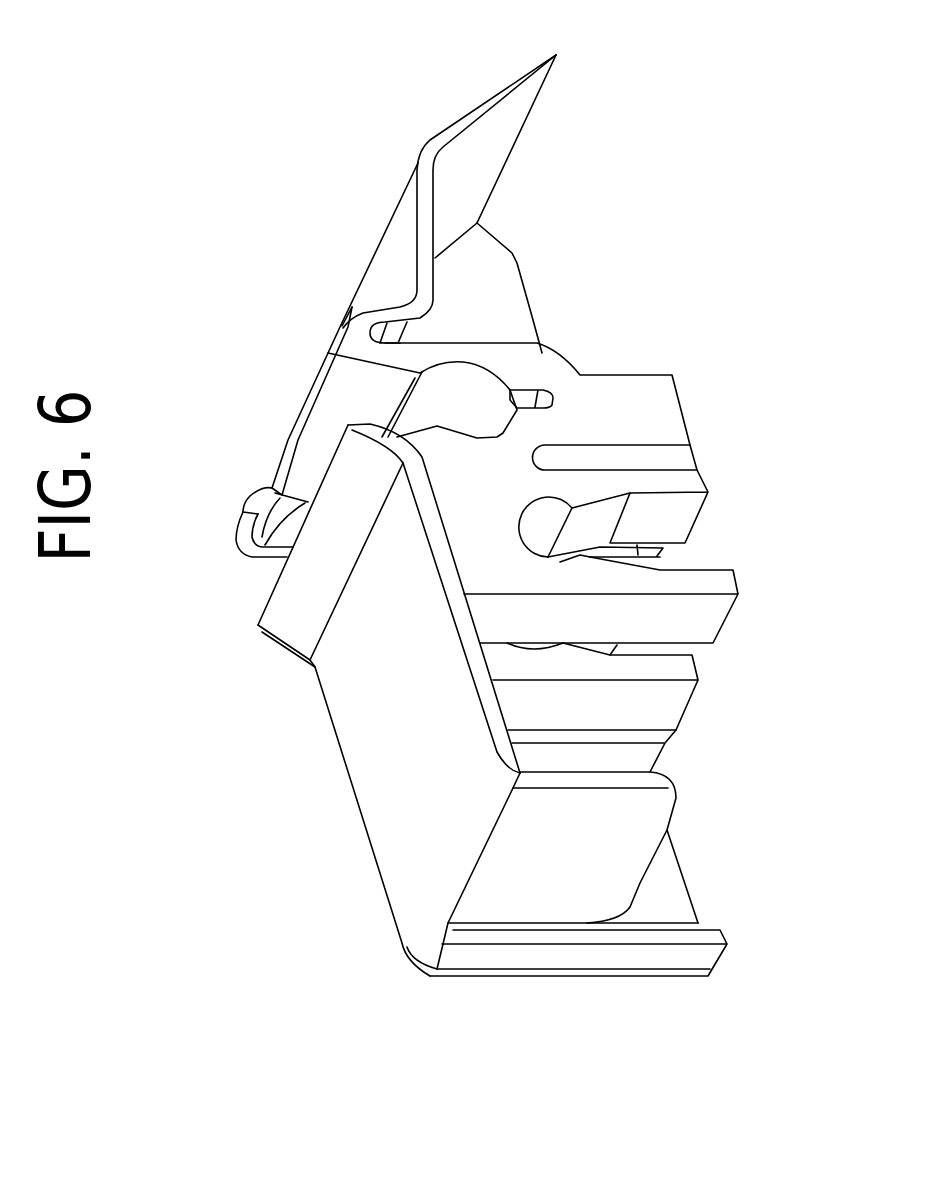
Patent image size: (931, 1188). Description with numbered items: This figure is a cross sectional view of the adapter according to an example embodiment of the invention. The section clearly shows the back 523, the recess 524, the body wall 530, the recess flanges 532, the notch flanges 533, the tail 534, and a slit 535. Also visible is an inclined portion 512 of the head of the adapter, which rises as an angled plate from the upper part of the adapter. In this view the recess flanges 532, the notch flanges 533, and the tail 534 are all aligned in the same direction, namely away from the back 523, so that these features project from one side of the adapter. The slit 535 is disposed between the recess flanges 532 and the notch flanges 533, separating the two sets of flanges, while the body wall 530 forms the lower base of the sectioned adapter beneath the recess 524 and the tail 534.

The inclined portion 512 is at (463, 127).
The back 523 is at (397, 742).
The recess 524 is at (713, 543).
The body wall 530 is at (682, 883).
The recess flanges 532 is at (705, 478).
The notch flanges 533 is at (672, 375).
The tail 534 is at (677, 798).
The slit 535 is at (693, 460).